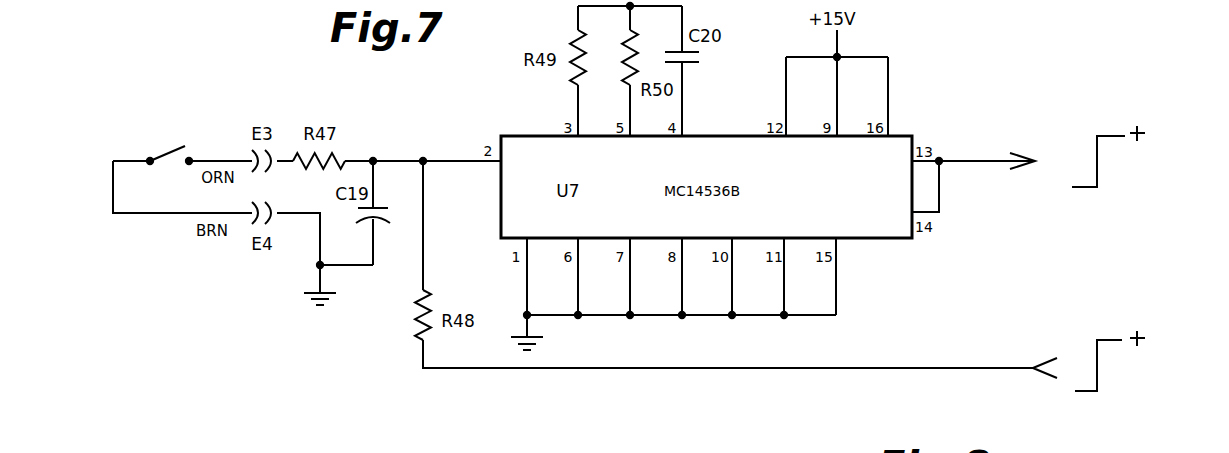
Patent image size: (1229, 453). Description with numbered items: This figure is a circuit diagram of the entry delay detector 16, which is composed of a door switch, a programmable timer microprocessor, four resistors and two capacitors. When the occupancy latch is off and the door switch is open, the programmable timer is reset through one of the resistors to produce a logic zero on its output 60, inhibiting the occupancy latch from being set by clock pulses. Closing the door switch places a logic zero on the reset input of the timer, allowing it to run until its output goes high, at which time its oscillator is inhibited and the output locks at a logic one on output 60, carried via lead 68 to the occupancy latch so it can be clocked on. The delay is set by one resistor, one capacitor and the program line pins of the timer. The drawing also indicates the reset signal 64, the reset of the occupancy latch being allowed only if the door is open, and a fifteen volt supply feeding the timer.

The entry delay detector 16 is at (232, 100).
The output signal 60 is at (1105, 165).
The reset signal 64 is at (1098, 360).
The lead 68 is at (980, 161).